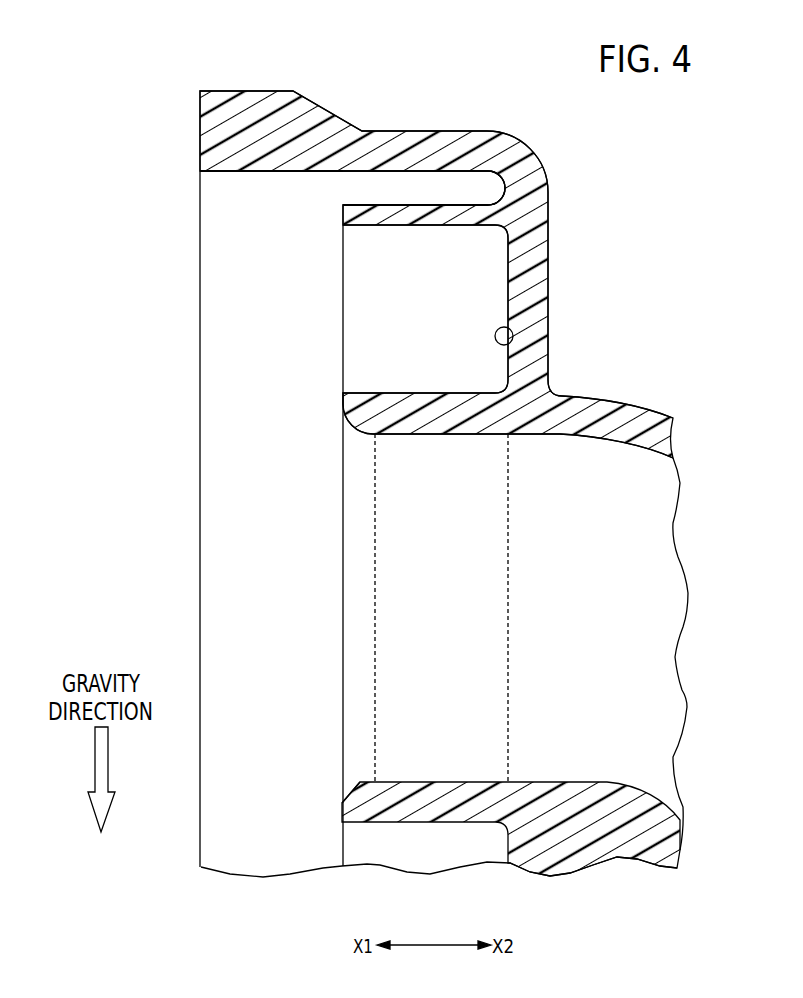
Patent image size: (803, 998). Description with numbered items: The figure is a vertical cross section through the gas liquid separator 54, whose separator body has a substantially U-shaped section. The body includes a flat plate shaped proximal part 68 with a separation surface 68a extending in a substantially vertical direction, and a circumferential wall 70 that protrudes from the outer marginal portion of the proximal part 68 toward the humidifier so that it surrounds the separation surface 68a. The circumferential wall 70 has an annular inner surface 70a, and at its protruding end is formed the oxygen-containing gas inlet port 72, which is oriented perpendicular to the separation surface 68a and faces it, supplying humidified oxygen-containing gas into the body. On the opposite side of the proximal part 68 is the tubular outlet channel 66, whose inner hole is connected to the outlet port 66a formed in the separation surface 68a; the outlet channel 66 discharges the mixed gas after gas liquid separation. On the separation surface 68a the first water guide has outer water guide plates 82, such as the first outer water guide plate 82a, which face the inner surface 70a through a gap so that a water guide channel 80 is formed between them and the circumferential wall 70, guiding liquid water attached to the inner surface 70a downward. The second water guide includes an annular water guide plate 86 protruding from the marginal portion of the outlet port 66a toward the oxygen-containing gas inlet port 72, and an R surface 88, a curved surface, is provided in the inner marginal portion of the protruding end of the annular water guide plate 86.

The gas liquid separator 54 is at (217, 76).
The outlet channel 66 is at (637, 414).
The outlet port 66a is at (508, 585).
The proximal part 68 is at (535, 296).
The separation surface 68a is at (513, 340).
The circumferential wall 70 is at (403, 140).
The inner surface 70a is at (217, 175).
The oxygen-containing gas inlet port 72 is at (200, 580).
The water guide channel 80 is at (452, 190).
The outer water guide plates 82 is at (377, 198).
The first outer water guide plate 82a is at (380, 212).
The annular water guide plate 86 is at (412, 790).
The R surface 88 is at (352, 797).